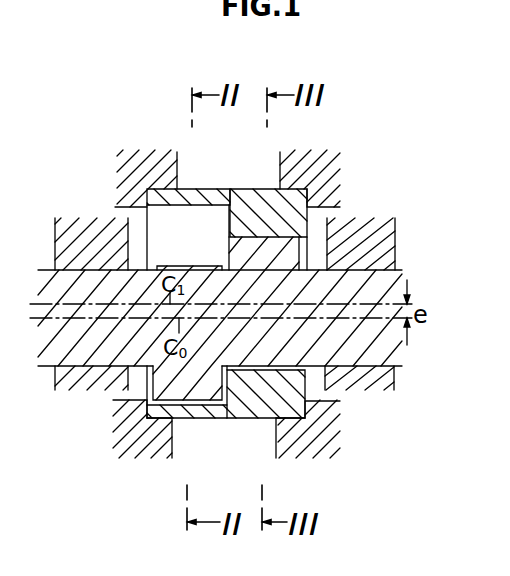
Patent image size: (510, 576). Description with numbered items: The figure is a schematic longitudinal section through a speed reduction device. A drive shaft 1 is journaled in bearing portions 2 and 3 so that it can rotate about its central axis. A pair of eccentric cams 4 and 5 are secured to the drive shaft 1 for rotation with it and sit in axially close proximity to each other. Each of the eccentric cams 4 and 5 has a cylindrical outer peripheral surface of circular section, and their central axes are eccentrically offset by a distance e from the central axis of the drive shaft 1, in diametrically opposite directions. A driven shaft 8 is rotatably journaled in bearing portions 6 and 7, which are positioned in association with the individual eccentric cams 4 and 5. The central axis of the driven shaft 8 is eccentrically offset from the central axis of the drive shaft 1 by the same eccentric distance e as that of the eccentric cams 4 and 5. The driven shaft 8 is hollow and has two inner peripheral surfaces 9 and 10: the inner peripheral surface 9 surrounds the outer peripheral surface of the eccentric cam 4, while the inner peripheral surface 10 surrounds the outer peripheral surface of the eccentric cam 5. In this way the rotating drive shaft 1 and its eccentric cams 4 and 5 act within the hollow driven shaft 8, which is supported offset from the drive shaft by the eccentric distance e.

The drive shaft 1 is at (96, 275).
The bearing portion 2 is at (62, 243).
The bearing portion 3 is at (395, 240).
The eccentric cam 4 is at (190, 267).
The eccentric cam 5 is at (237, 248).
The bearing portion 6 is at (177, 170).
The bearing portion 7 is at (280, 169).
The driven shaft 8 is at (233, 419).
The inner peripheral surface 9 is at (176, 206).
The inner peripheral surface 10 is at (268, 238).